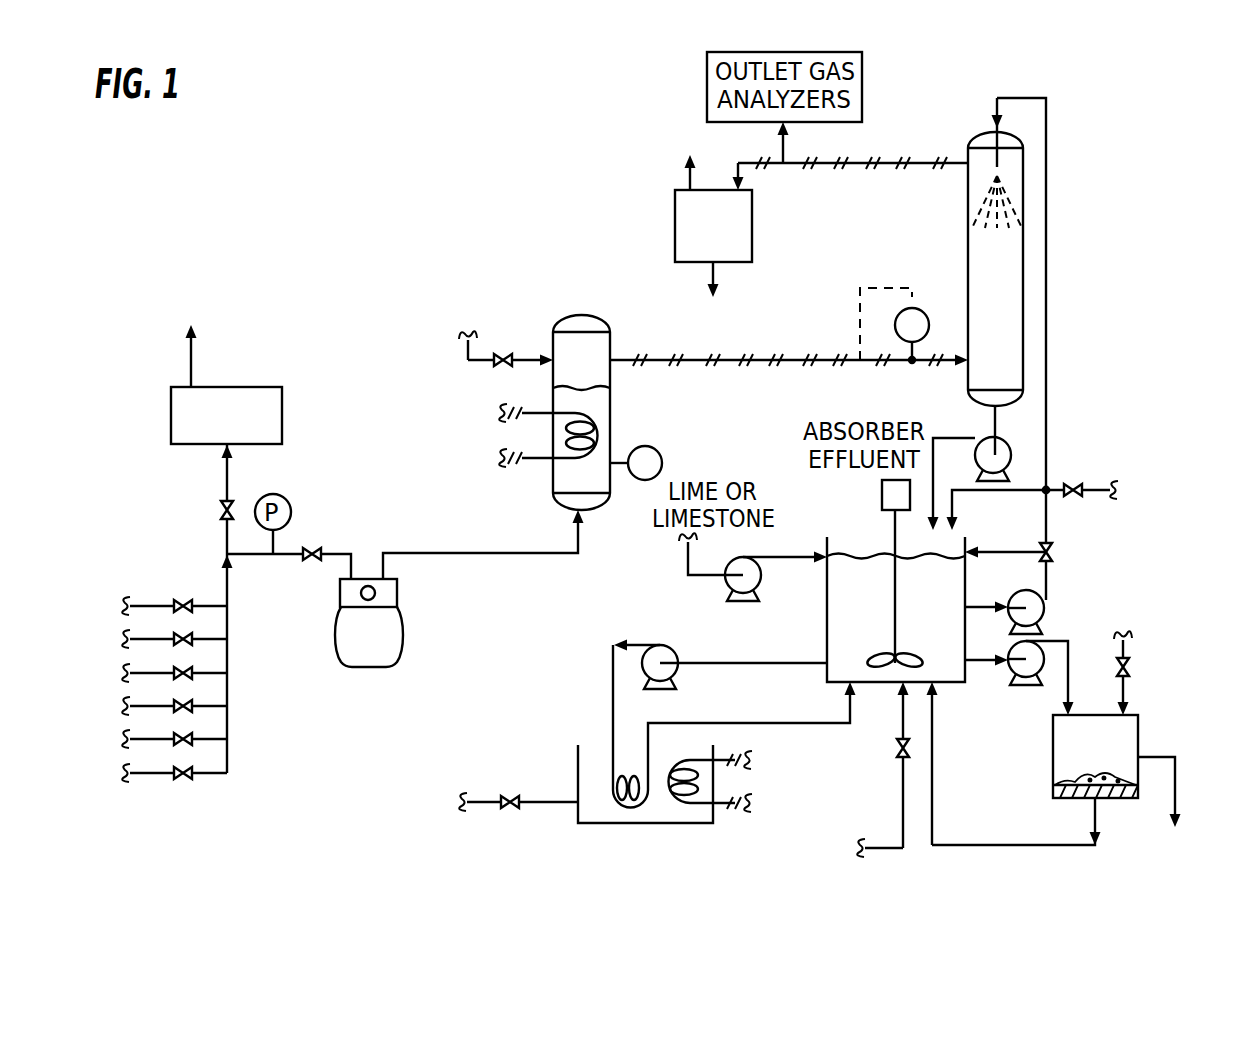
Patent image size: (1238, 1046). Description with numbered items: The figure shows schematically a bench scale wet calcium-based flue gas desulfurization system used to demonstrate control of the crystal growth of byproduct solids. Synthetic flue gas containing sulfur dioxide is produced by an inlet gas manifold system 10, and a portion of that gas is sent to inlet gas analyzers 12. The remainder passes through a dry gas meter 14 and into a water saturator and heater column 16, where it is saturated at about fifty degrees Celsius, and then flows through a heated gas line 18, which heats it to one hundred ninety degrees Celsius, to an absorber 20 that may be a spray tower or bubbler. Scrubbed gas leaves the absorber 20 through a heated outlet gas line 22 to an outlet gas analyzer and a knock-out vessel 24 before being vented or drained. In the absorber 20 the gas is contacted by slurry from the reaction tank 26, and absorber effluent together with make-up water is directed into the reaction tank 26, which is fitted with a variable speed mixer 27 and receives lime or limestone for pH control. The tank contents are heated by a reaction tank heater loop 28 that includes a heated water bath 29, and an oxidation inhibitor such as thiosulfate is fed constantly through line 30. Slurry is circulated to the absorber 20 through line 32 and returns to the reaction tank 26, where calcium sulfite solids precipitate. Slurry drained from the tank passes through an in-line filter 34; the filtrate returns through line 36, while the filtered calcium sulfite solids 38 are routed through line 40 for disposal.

The inlet gas manifold system 10 is at (227, 685).
The inlet gas analyzers 12 is at (240, 431).
The dry gas meter 14 is at (357, 650).
The water saturator and heater column 16 is at (597, 410).
The heated gas line 18 is at (784, 357).
The absorber 20 is at (968, 300).
The heated outlet gas line 22 is at (890, 163).
The knock-out vessel 24 is at (727, 241).
The reaction tank 26 is at (827, 613).
The variable speed mixer 27 is at (895, 530).
The reaction tank heater loop 28 is at (575, 710).
The heated water bath 29 is at (657, 823).
The line 30 is at (903, 787).
The line 32 is at (1046, 352).
The in-line filter 34 is at (1077, 742).
The line 36 is at (1033, 845).
The filtered calcium sulfite solids 38 is at (1108, 780).
The line 40 is at (1175, 795).